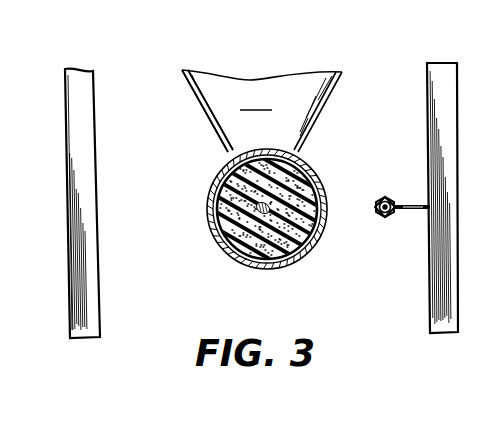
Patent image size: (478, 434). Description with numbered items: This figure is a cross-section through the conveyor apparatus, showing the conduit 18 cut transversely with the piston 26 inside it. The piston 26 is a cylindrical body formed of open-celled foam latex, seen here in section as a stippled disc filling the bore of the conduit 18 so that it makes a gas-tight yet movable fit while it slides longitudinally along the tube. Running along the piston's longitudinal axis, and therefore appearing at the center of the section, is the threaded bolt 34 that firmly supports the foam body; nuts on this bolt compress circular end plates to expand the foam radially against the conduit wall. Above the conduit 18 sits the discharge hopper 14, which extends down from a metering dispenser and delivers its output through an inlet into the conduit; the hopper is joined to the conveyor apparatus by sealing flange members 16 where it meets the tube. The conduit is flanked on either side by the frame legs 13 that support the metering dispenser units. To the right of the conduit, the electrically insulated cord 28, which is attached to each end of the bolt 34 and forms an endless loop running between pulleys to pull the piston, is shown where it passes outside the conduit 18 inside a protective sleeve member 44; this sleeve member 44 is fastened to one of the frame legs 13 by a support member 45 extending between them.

The legs 13 is at (90, 306).
The discharge hopper 14 is at (259, 112).
The sealing flange members 16 is at (228, 150).
The conduit 18 is at (318, 237).
The piston 26 is at (283, 262).
The electrically insulated cord 28 is at (391, 198).
The threaded bolt 34 is at (218, 240).
The sleeve member 44 is at (379, 202).
The support member 45 is at (404, 211).